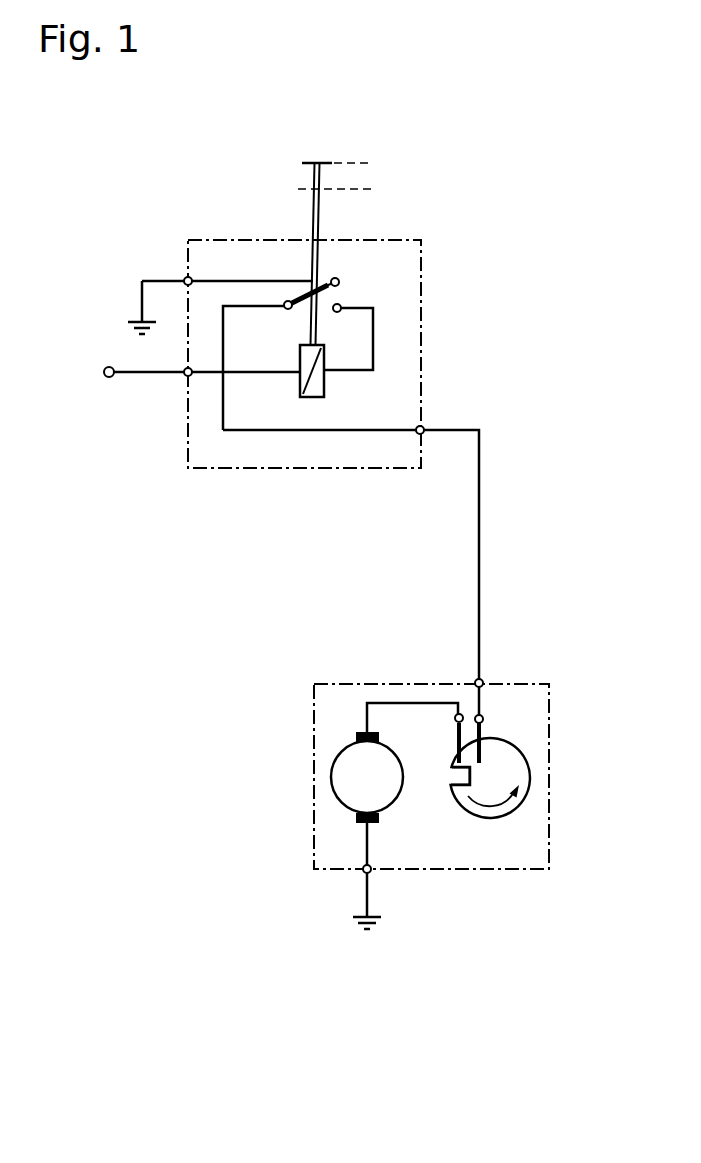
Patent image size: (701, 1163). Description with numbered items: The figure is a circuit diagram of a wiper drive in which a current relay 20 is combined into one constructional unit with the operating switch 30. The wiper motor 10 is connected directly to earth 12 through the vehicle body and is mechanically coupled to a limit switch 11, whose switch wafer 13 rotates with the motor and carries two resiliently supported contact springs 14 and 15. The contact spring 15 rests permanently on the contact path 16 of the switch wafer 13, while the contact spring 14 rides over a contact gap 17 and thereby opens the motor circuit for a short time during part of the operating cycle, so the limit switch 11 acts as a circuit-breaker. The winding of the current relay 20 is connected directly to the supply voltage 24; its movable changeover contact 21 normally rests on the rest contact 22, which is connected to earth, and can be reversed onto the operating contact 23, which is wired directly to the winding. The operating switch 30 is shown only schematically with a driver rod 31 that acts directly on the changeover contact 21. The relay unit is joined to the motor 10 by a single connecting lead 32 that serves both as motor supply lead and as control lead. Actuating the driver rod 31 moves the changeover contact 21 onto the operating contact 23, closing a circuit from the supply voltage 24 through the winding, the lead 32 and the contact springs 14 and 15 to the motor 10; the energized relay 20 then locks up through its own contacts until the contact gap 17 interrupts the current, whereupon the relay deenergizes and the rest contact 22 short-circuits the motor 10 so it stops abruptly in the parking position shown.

The wiper motor 10 is at (338, 800).
The limit switch 11 is at (480, 850).
The earth 12 is at (362, 917).
The switch wafer 13 is at (528, 797).
The contact spring 14 is at (459, 726).
The contact spring 15 is at (482, 724).
The contact path 16 is at (478, 793).
The contact gap 17 is at (449, 770).
The current relay 20 is at (324, 388).
The changeover contact 21 is at (322, 294).
The rest contact 22 is at (335, 278).
The operating contact 23 is at (337, 304).
The supply voltage 24 is at (109, 367).
The operating switch 30 is at (418, 163).
The driver rod 31 is at (313, 227).
The connecting lead 32 is at (480, 458).